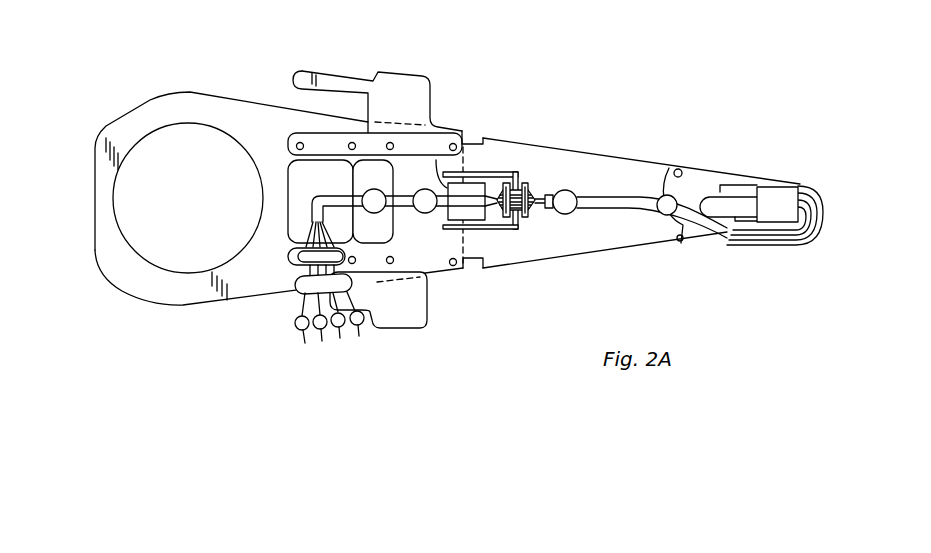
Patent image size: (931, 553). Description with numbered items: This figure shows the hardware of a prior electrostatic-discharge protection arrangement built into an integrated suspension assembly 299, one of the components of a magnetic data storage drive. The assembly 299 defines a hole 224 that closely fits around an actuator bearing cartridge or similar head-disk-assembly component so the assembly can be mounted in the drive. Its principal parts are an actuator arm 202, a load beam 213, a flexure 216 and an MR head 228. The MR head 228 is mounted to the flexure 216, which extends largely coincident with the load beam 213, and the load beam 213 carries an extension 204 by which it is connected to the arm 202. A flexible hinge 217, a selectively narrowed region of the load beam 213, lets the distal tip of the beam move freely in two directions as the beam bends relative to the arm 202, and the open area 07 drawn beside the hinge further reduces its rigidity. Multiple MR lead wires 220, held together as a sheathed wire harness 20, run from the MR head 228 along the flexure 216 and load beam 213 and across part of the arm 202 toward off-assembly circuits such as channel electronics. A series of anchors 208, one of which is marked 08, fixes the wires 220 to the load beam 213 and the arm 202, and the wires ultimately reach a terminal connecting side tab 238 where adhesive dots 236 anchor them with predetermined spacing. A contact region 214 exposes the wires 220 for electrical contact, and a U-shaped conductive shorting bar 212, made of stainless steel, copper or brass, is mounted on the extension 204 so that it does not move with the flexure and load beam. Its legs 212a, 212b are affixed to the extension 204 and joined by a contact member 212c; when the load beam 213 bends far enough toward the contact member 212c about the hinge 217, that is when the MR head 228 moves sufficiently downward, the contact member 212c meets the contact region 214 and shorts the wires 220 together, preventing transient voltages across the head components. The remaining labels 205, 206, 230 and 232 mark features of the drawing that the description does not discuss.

The integrated suspension assembly 299 is at (520, 52).
The actuator arm 202 is at (123, 120).
The hole 224 is at (162, 264).
The extension 204 is at (290, 124).
The mounting hole 205 is at (390, 142).
The tab 206 is at (325, 73).
The open area 07 is at (436, 160).
The anchor 08 is at (374, 203).
The MR lead wires 20 is at (338, 195).
The load beam 213 is at (638, 160).
The flexible hinge 217 is at (477, 142).
The shorting bar 212 is at (520, 160).
The leg of shorting bar 212a is at (490, 172).
The leg of shorting bar 212b is at (492, 230).
The contact member 212c is at (518, 230).
The contact region 214 is at (547, 175).
The anchors 208 is at (567, 203).
The MR lead wires 220 is at (628, 206).
The flexure 216 is at (695, 192).
The MR head 228 is at (774, 190).
The terminal connecting side tab 238 is at (423, 328).
The cable band 230 is at (289, 259).
The cable clamp band 232 is at (295, 287).
The adhesive dots 236 is at (305, 330).